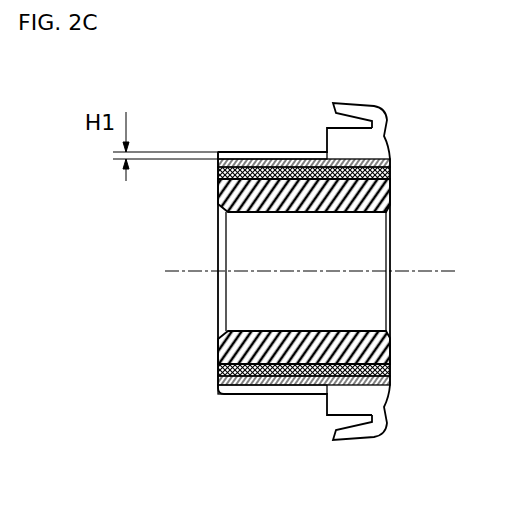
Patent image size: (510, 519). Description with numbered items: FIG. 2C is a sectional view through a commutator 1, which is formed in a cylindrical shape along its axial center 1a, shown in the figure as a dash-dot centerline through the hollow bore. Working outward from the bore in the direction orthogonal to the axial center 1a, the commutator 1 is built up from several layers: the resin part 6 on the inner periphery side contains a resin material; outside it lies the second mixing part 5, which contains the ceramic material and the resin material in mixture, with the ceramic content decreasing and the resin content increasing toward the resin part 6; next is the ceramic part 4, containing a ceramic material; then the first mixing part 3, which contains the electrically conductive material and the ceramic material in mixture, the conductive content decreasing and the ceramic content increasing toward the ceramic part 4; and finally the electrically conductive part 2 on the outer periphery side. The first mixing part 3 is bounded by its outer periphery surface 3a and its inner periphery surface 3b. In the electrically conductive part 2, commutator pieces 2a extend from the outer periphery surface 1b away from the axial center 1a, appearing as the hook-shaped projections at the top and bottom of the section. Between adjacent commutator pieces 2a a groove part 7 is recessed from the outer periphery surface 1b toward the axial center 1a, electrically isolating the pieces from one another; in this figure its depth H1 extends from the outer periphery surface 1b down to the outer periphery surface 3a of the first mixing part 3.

The commutator 1 is at (263, 394).
The axial center 1a is at (200, 271).
The outer periphery surface 1b is at (290, 152).
The electrically conductive part 2 is at (376, 392).
The commutator piece 2a is at (352, 438).
The first mixing part 3 is at (390, 382).
The outer periphery surface of first mixing part 3a is at (363, 159).
The inner periphery surface of first mixing part 3b is at (390, 178).
The ceramic part 4 is at (391, 378).
The second mixing part 5 is at (390, 372).
The resin part 6 is at (391, 350).
The groove part 7 is at (225, 153).